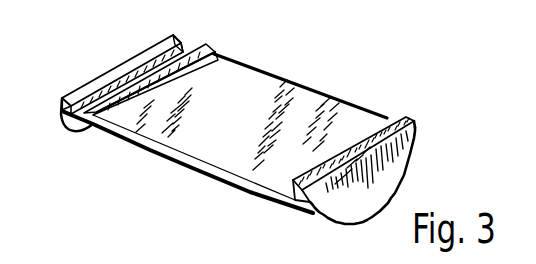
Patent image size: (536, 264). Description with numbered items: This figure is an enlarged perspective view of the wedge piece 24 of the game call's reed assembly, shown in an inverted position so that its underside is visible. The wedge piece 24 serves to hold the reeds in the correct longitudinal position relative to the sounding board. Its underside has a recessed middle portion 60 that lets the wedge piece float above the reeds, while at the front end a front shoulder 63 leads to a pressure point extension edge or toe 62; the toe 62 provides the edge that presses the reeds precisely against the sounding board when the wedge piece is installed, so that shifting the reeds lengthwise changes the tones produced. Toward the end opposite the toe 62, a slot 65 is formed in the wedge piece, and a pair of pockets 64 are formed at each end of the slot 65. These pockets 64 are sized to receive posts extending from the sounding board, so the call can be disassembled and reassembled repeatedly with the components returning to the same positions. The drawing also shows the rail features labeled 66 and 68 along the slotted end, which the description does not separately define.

The wedge piece 24 is at (277, 75).
The recessed middle portion 60 is at (244, 125).
The pressure point extension edge or toe 62 is at (411, 120).
The front shoulder 63 is at (392, 122).
The pockets 64 is at (183, 52).
The slot 65 is at (139, 72).
The upper rail 66 is at (147, 50).
The lower rail 68 is at (201, 45).